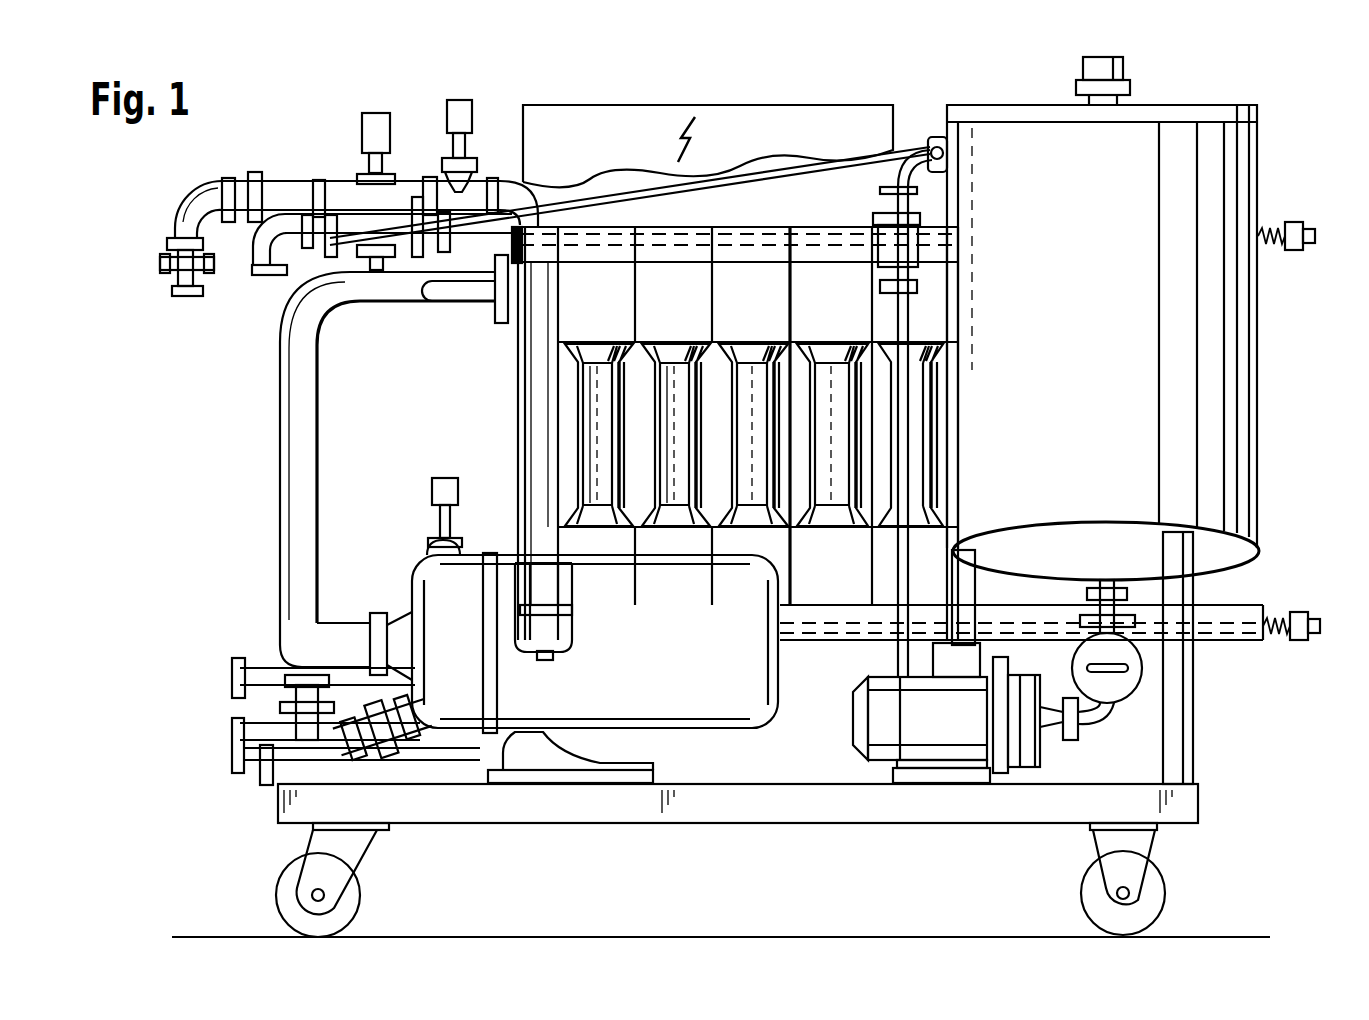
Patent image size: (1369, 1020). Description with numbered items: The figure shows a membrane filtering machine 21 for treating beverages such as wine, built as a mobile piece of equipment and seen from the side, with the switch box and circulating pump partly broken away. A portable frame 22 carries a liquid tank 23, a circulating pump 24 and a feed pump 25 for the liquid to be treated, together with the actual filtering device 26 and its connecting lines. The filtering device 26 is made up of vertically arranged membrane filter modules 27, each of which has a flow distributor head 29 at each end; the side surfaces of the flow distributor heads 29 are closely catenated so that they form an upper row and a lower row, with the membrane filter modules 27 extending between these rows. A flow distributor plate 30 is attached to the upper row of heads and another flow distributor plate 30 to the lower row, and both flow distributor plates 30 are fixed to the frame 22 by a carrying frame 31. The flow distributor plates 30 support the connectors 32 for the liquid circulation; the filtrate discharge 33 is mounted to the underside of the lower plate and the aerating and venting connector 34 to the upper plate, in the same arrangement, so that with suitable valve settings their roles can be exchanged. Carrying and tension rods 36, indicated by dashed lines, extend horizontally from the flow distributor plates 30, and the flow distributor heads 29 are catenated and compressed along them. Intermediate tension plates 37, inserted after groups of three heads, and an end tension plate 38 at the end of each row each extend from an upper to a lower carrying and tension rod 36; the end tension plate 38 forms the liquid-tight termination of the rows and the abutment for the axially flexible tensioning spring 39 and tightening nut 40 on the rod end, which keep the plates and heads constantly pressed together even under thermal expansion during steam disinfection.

The membrane filtering machine 21 is at (238, 460).
The portable frame 22 is at (778, 824).
The liquid tank 23 is at (1110, 317).
The circulating pump 24 is at (673, 656).
The feed pump 25 is at (948, 728).
The filtering device 26 is at (560, 418).
The membrane filter modules 27 is at (667, 452).
The flow distributor heads 29 is at (610, 317).
The flow distributor plate 30 is at (537, 334).
The carrying frame 31 is at (537, 496).
The connectors 32 is at (514, 592).
The filtrate discharge 33 is at (546, 656).
The aerating and venting connector 34 is at (512, 215).
The carrying and tension rods 36 is at (742, 237).
The intermediate tension plates 37 is at (796, 250).
The end tension plate 38 is at (1260, 574).
The tensioning device or spring 39 is at (1278, 212).
The tightening nut 40 is at (1294, 252).